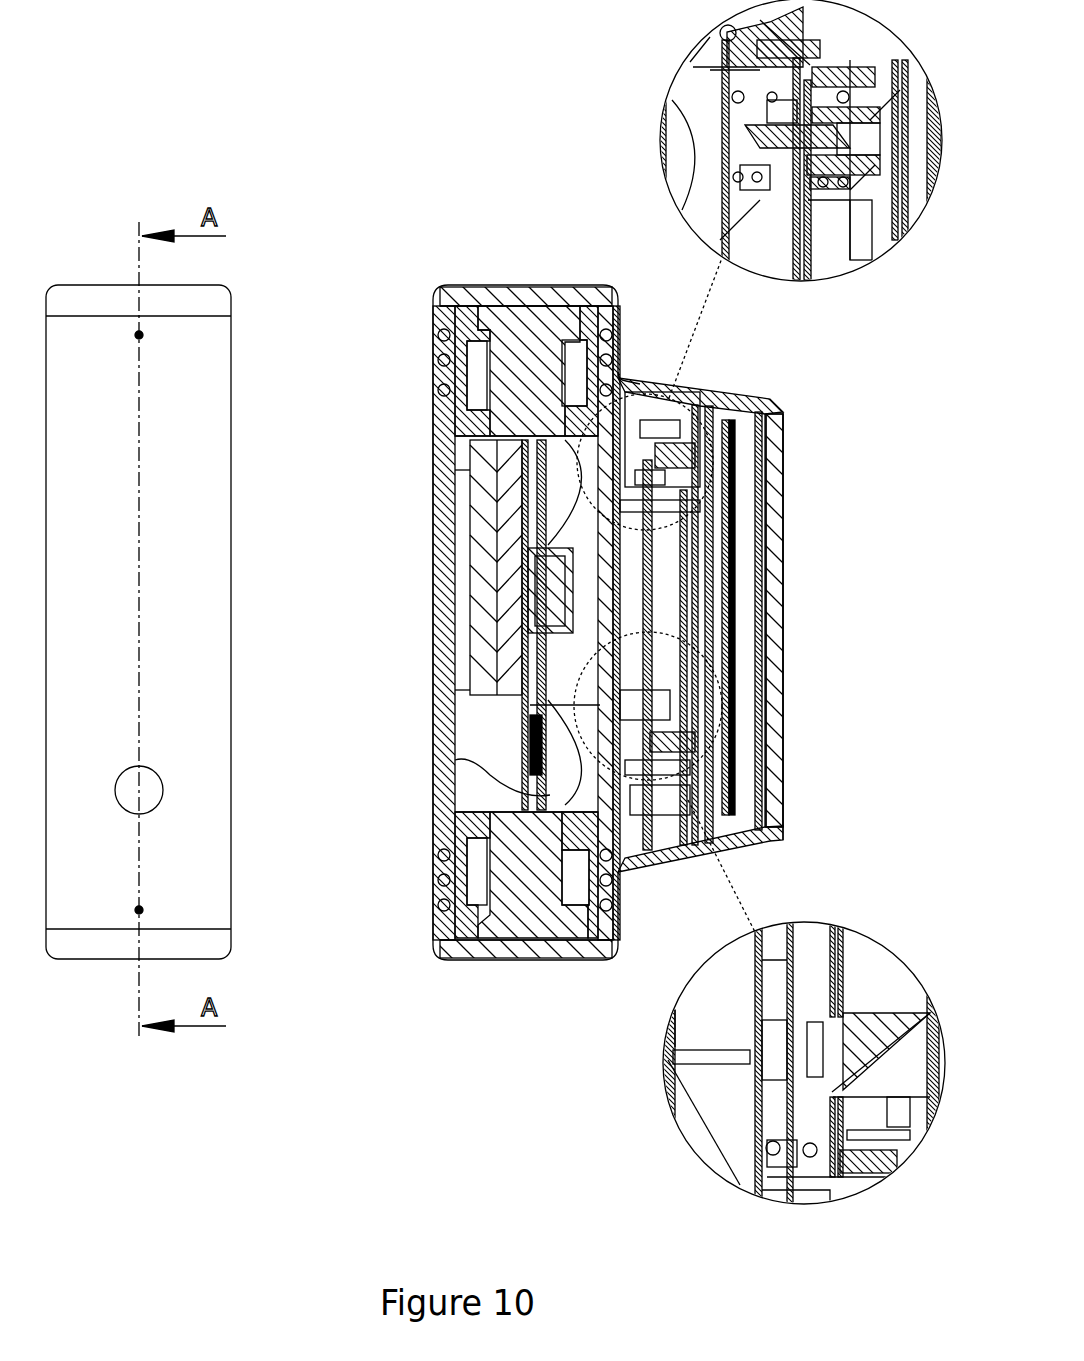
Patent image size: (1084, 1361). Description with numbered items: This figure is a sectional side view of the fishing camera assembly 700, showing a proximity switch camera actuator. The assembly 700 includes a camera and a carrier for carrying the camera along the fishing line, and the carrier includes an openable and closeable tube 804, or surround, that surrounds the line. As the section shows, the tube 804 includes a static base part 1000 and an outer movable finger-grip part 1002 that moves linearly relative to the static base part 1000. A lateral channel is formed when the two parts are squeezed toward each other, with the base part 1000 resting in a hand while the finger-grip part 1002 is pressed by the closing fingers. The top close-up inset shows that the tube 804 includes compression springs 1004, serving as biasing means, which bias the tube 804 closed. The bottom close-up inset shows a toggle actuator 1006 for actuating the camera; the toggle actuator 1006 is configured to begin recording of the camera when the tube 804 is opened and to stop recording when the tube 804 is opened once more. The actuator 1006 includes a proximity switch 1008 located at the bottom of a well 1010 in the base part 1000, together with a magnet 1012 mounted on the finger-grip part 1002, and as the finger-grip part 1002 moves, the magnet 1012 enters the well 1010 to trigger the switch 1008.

The assembly 700 is at (428, 298).
The tube 804 is at (828, 416).
The static base part 1000 is at (624, 375).
The outer movable finger-grip part 1002 is at (776, 605).
The compression springs 1004 is at (785, 170).
The toggle actuator 1006 is at (857, 988).
The proximity switch 1008 is at (748, 1055).
The well 1010 is at (775, 1035).
The magnet 1012 is at (815, 1055).